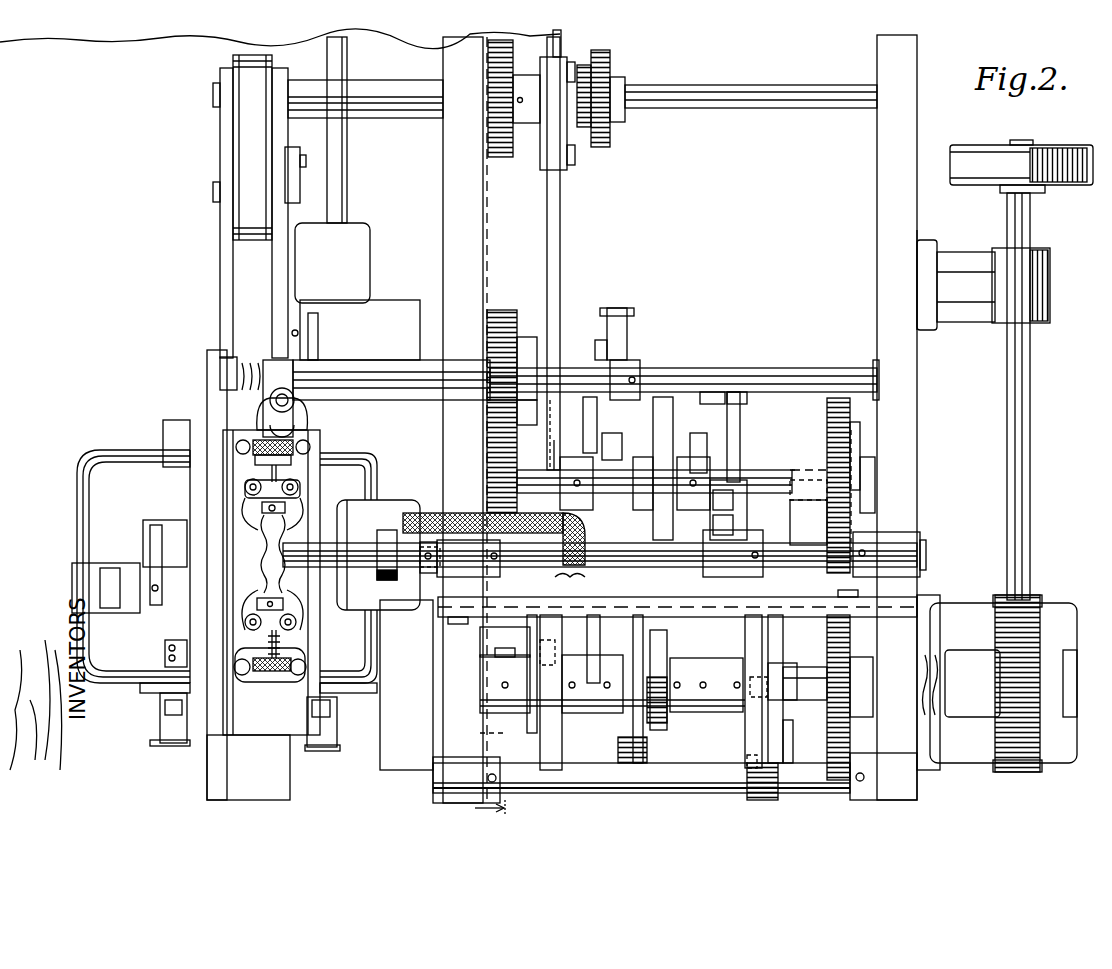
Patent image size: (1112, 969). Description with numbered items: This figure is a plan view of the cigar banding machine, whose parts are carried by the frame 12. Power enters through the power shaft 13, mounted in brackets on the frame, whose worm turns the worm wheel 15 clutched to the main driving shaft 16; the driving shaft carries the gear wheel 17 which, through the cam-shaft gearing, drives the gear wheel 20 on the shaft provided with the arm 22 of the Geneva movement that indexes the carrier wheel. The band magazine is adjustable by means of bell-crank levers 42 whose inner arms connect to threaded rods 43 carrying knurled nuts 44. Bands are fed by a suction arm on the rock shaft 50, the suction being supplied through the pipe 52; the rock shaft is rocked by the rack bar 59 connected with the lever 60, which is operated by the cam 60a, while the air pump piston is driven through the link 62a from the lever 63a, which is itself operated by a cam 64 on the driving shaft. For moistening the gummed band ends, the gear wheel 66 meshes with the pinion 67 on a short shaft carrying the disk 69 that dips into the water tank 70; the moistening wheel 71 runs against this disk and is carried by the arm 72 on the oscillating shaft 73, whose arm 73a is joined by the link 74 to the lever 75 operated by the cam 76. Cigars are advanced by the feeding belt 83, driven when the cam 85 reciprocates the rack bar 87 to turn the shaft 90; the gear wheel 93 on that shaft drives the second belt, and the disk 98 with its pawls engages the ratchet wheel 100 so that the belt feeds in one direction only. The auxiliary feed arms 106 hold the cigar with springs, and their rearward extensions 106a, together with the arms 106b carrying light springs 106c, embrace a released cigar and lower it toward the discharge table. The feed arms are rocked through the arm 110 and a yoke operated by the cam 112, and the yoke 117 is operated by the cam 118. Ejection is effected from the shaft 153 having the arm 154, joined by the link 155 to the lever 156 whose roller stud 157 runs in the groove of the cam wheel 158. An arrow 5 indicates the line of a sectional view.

The direction arrow 5 is at (498, 808).
The frame 12 is at (470, 265).
The power shaft 13 is at (1030, 418).
The worm wheel 15 is at (1040, 605).
The main driving shaft 16 is at (812, 690).
The gear wheel 17 is at (835, 750).
The gear wheel 20 is at (828, 423).
The arm 22 is at (790, 462).
The bell-crank levers 42 is at (302, 530).
The rods 43 is at (270, 672).
The knurled nuts 44 is at (245, 676).
The shaft 50 is at (378, 555).
The pipe 52 is at (572, 590).
The bar 59 is at (742, 410).
The lever 60 is at (703, 440).
The cam 60a is at (736, 400).
The link 62a is at (625, 689).
The lever 63a is at (650, 737).
The bar 64 is at (667, 640).
The gear wheel 66 is at (560, 437).
The pinion 67 is at (517, 322).
The disk 69 is at (318, 322).
The water tank 70 is at (363, 260).
The moistening wheel 71 is at (310, 422).
The arm 72 is at (288, 374).
The oscillating shaft 73 is at (762, 374).
The arm 73a is at (624, 352).
The link 74 is at (598, 345).
The lever 75 is at (592, 430).
The cam 76 is at (622, 445).
The feeding belt 83 is at (248, 153).
The cam 85 is at (540, 437).
The bar 87 is at (561, 219).
The shaft 90 is at (705, 92).
The gear wheel 93 is at (500, 158).
The disk 98 is at (610, 130).
The ratchet wheel 100 is at (585, 100).
The auxiliary feed arms 106 is at (80, 484).
The rearward extensions 106a is at (383, 668).
The arms 106b is at (320, 748).
The light springs 106c is at (333, 722).
The arm 110 is at (506, 670).
The cam 112 is at (562, 745).
The yoke 117 is at (683, 467).
The cam 118 is at (665, 400).
The shaft 153 is at (645, 786).
The arm 154 is at (747, 795).
The link 155 is at (787, 762).
The lever 156 is at (780, 665).
The roller stud 157 is at (755, 705).
The cam wheel 158 is at (745, 750).